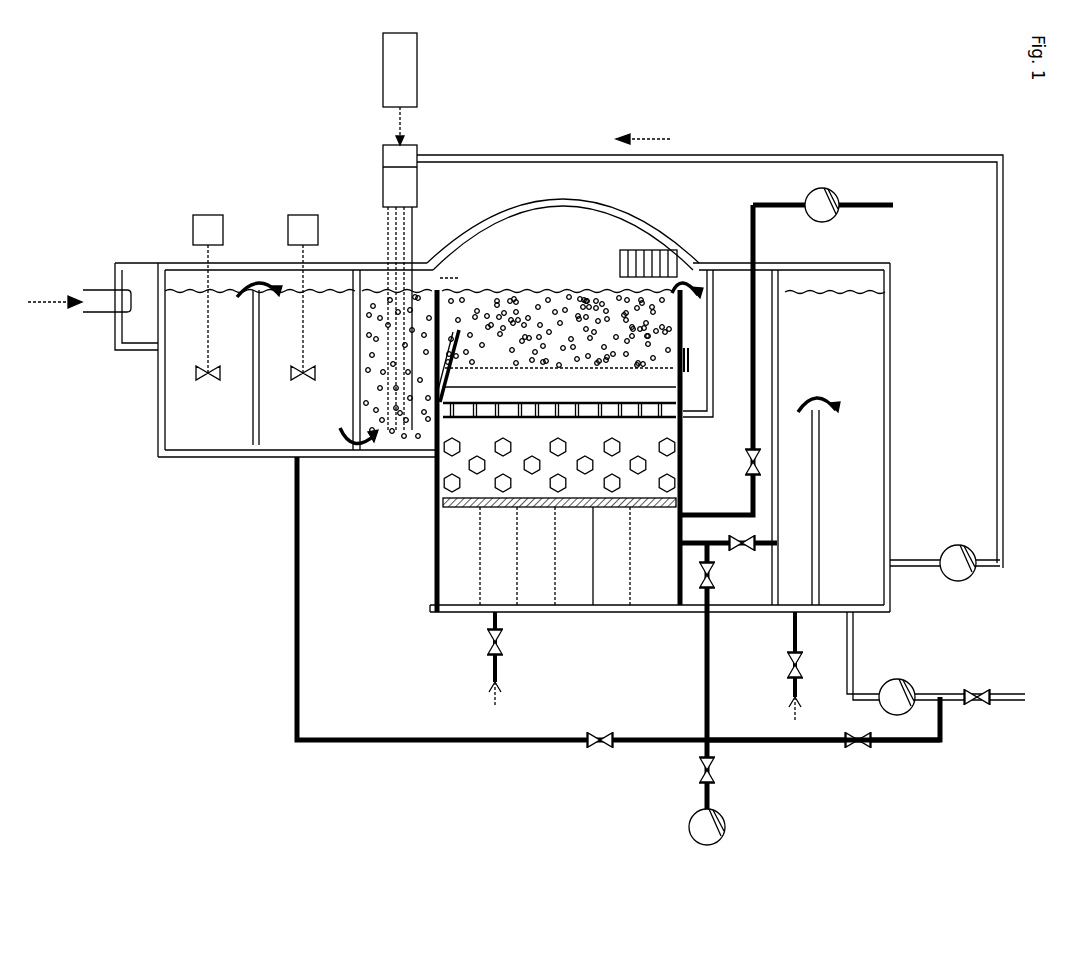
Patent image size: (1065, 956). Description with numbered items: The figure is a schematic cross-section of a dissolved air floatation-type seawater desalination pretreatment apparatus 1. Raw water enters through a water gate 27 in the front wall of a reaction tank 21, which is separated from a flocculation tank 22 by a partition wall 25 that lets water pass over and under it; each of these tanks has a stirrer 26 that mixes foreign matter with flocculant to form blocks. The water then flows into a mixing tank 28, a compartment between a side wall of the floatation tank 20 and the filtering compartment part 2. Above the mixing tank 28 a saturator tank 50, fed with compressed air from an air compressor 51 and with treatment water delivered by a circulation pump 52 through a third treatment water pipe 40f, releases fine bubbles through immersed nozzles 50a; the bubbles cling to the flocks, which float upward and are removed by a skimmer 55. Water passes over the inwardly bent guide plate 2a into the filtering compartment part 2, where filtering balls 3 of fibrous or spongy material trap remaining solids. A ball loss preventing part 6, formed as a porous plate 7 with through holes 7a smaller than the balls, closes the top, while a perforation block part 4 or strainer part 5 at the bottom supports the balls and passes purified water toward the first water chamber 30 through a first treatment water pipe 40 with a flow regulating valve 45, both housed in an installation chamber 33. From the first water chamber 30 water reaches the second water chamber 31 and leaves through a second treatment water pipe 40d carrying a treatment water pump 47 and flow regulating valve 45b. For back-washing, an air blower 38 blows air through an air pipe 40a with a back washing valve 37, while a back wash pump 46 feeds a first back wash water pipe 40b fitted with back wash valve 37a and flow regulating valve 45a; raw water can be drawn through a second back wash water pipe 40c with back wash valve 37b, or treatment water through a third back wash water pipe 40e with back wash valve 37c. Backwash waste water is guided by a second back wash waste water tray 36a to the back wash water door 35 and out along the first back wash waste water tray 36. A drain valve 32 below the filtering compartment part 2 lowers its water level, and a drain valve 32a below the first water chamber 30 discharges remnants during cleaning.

The DAF-type pretreatment apparatus 1 is at (688, 437).
The filtering compartment part 2 is at (433, 548).
The guide plate 2a is at (450, 283).
The filtering balls 3 is at (654, 467).
The perforation block part 4 is at (559, 578).
The strainer part 5 is at (566, 592).
The ball loss preventing part 6 is at (583, 396).
The porous plate 7 is at (607, 396).
The through holes 7a is at (493, 400).
The floatation tank 20 is at (545, 280).
The reaction tank 21 is at (180, 428).
The flocculation tank 22 is at (278, 433).
The partition wall 25 is at (248, 413).
The stirrer 26 is at (208, 212).
The water gate 27 is at (157, 292).
The mixing tank 28 is at (392, 440).
The first water chamber 30 is at (813, 600).
The second water chamber 31 is at (877, 588).
The drain valve 32 is at (488, 636).
The drain valve 32a is at (801, 675).
The installation chamber 33 is at (687, 602).
The back wash water door 35 is at (693, 364).
The first back wash waste water tray 36 is at (695, 328).
The second back wash waste water tray 36a is at (520, 396).
The back washing valve 37 is at (746, 466).
The back wash valve 37a is at (713, 585).
The back wash valve 37b is at (606, 750).
The back wash valve 37c is at (862, 750).
The air blower 38 is at (821, 186).
The first treatment water pipe 40 is at (697, 532).
The air pipe 40a is at (791, 204).
The first back wash water pipe 40b is at (712, 683).
The second back wash water pipe 40c is at (388, 748).
The second treatment water pipe 40d is at (855, 651).
The third back wash water pipe 40e is at (763, 748).
The third treatment water pipe 40f is at (851, 154).
The flow regulating valve 45 is at (737, 550).
The flow regulating valve 45a is at (696, 786).
The flow regulating valve 45b is at (977, 707).
The back wash pump 46 is at (688, 820).
The treatment water pump 47 is at (908, 680).
The saturator tank 50 is at (419, 144).
The nozzles 50a is at (392, 270).
The air compressor 51 is at (420, 47).
The circulation pump 52 is at (958, 546).
The skimmer 55 is at (657, 252).